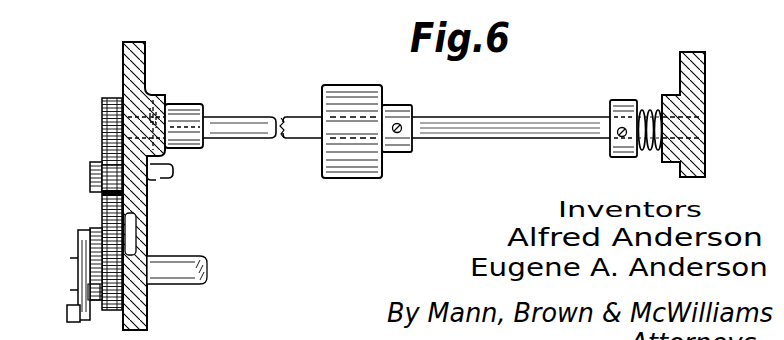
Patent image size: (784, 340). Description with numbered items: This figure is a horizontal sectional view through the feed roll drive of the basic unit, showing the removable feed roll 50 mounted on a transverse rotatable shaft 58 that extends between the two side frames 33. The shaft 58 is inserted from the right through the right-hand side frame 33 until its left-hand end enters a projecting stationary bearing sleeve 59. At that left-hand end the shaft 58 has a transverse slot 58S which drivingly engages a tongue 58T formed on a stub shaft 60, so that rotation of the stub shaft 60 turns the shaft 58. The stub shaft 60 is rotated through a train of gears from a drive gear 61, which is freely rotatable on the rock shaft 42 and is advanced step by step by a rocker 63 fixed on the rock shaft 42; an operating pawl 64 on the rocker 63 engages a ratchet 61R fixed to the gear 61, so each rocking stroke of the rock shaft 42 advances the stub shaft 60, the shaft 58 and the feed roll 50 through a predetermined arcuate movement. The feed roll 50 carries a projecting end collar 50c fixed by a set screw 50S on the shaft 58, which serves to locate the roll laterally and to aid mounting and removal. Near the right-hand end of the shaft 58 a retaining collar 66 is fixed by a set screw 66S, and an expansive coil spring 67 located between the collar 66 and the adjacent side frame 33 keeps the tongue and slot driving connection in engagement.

The side frame 33 is at (123, 44).
The rock shaft 42 is at (190, 266).
The feed roll 50 is at (347, 155).
The end collar 50c is at (403, 152).
The set screw 50S is at (400, 124).
The shaft 58 is at (261, 125).
The transverse slot 58S is at (172, 125).
The tongue 58T is at (152, 103).
The bearing sleeve 59 is at (199, 150).
The stub shaft 60 is at (120, 78).
The drive gear 61 is at (104, 210).
The ratchet 61R is at (93, 293).
The rocker 63 is at (86, 247).
The operating pawl 64 is at (100, 228).
The retaining collar 66 is at (612, 102).
The set screw 66S is at (617, 140).
The coil spring 67 is at (645, 110).